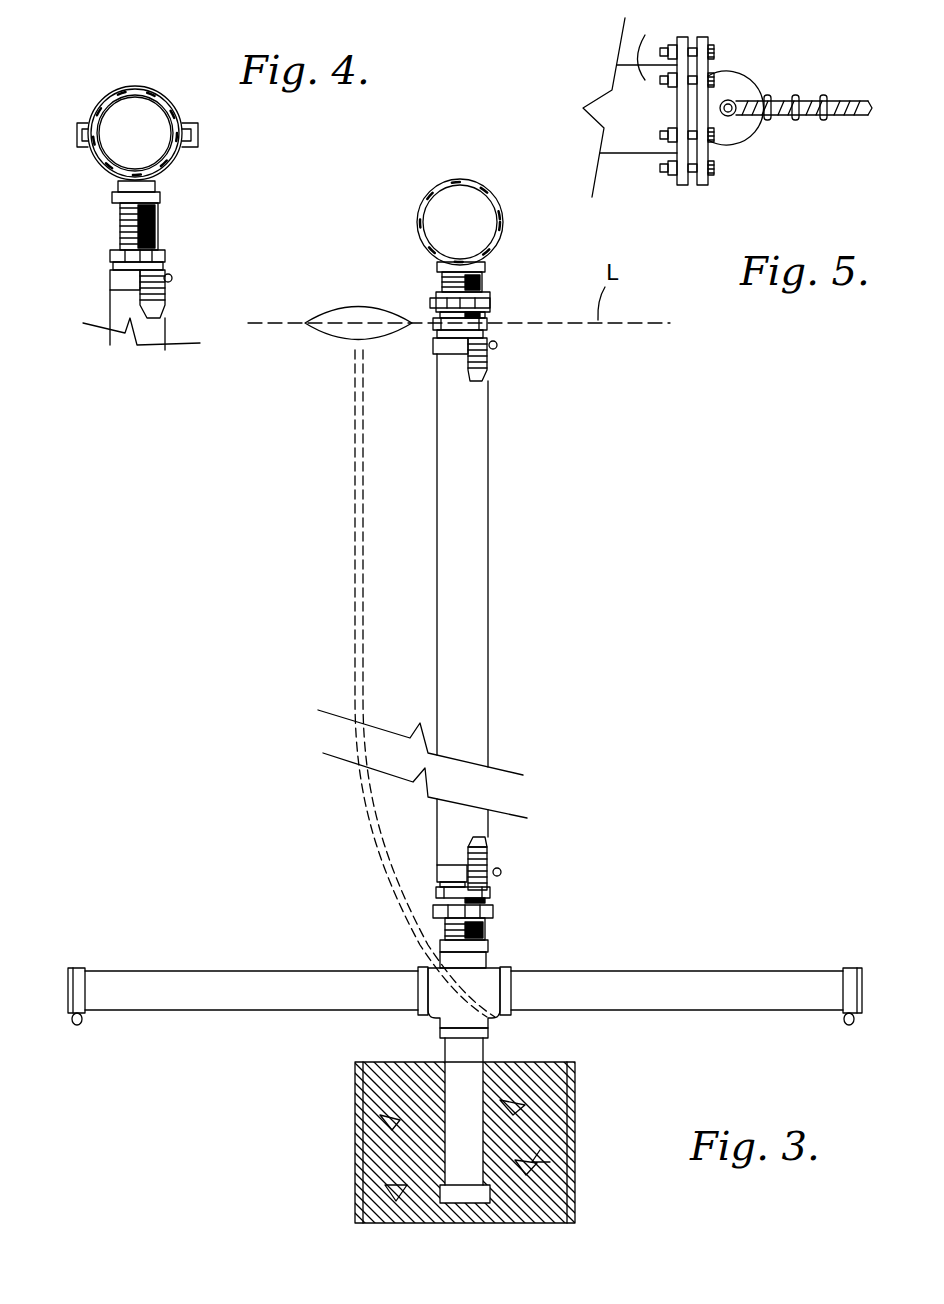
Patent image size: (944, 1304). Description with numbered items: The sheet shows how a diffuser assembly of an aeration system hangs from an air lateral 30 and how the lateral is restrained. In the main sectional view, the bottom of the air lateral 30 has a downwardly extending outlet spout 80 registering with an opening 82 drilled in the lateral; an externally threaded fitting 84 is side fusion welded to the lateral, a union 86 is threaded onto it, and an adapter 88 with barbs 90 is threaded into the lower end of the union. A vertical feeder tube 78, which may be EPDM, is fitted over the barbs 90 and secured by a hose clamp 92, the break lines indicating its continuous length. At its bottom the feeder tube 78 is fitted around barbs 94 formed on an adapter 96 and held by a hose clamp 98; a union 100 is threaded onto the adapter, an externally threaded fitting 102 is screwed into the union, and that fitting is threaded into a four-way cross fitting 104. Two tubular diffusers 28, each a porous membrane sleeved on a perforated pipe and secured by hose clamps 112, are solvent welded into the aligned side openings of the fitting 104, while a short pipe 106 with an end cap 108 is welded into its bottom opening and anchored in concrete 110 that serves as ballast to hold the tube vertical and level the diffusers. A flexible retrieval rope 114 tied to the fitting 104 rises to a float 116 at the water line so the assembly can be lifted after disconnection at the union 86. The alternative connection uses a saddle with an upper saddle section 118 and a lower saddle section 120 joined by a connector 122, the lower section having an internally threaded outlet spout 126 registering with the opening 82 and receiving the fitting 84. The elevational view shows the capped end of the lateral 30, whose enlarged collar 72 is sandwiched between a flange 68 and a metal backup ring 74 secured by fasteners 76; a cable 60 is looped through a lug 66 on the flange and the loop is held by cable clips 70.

In FIG. 3, the diffuser 28 is at (197, 965).
In FIG. 4, the air lateral 30 is at (168, 100).
In FIG. 5, the air lateral 30 is at (650, 44).
In FIG. 3, the air lateral 30 is at (455, 180).
In FIG. 5, the cable 60 is at (866, 105).
In FIG. 5, the lug 66 is at (728, 132).
In FIG. 5, the flange 68 is at (700, 100).
In FIG. 5, the cable clip 70 is at (823, 120).
In FIG. 5, the collar 72 is at (630, 107).
In FIG. 5, the backup ring 74 is at (680, 42).
In FIG. 5, the fasteners 76 is at (710, 152).
In FIG. 4, the feeder tube 78 is at (125, 328).
In FIG. 3, the feeder tube 78 is at (478, 572).
In FIG. 3, the outlet spout 80 is at (488, 264).
In FIG. 4, the opening 82 is at (133, 178).
In FIG. 3, the opening 82 is at (460, 262).
In FIG. 4, the externally threaded fitting 84 is at (155, 214).
In FIG. 3, the externally threaded fitting 84 is at (485, 279).
In FIG. 3, the union 86 is at (478, 304).
In FIG. 4, the adapter 88 is at (165, 256).
In FIG. 3, the adapter 88 is at (488, 325).
In FIG. 4, the barbs 90 is at (160, 305).
In FIG. 3, the barbs 90 is at (483, 372).
In FIG. 4, the hose clamp 92 is at (118, 277).
In FIG. 3, the hose clamp 92 is at (445, 350).
In FIG. 3, the barbs 94 is at (483, 860).
In FIG. 3, the adapter 96 is at (483, 890).
In FIG. 3, the hose clamp 98 is at (453, 865).
In FIG. 3, the union 100 is at (490, 911).
In FIG. 3, the externally threaded fitting 102 is at (484, 935).
In FIG. 3, the four-way cross fitting 104 is at (445, 1010).
In FIG. 3, the short pipe 106 is at (465, 1085).
In FIG. 3, the end cap 108 is at (470, 1202).
In FIG. 3, the concrete 110 is at (575, 1158).
In FIG. 3, the hose clamp 112 is at (76, 968).
In FIG. 3, the retrieval rope 114 is at (358, 562).
In FIG. 3, the float 116 is at (372, 302).
In FIG. 4, the upper saddle section 118 is at (102, 95).
In FIG. 4, the lower saddle section 120 is at (103, 168).
In FIG. 4, the connector 122 is at (75, 137).
In FIG. 4, the outlet spout 126 is at (158, 194).